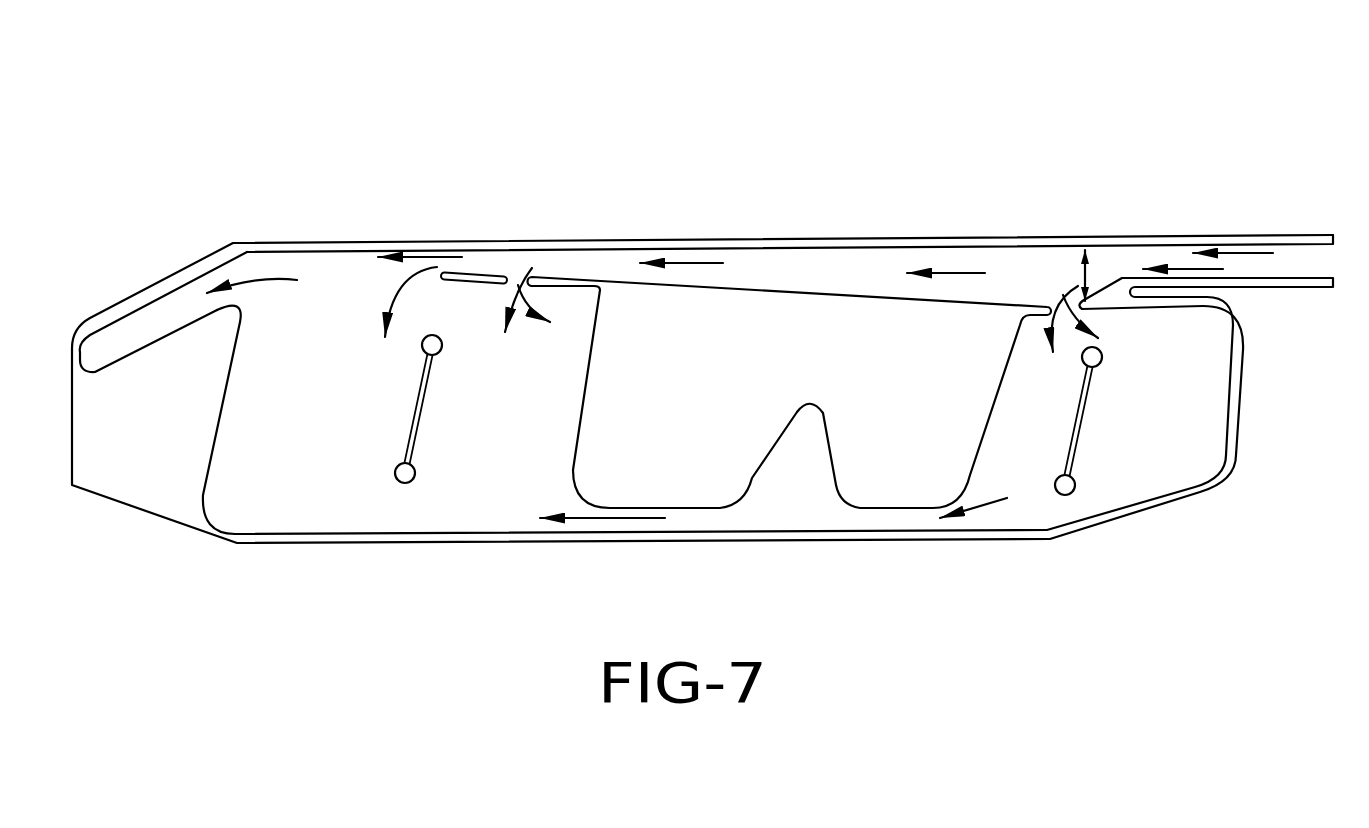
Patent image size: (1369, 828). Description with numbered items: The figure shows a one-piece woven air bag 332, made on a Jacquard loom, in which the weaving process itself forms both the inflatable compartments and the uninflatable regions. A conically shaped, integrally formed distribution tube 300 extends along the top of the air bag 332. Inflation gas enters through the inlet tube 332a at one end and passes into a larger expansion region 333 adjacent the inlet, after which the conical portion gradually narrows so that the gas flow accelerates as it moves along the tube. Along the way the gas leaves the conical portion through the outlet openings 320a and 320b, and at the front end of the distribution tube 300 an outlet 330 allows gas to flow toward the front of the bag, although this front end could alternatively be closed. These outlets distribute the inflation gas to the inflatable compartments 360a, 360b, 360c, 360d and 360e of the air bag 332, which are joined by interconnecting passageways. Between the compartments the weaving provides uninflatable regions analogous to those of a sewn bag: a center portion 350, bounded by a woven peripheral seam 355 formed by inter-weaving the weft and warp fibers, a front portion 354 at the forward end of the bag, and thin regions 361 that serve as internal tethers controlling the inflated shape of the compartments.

The distribution tube 300 is at (855, 273).
The air bag 332 is at (357, 205).
The inlet tube 332a is at (1297, 257).
The expansion region 333 is at (1087, 303).
The front outlet 330 is at (447, 267).
The outlet opening 320a is at (515, 290).
The outlet opening 320b is at (1052, 303).
The center portion 350 is at (780, 373).
The front portion 354 is at (170, 435).
The seam 355 is at (683, 512).
The inflatable compartment 360a is at (150, 318).
The inflatable compartment 360b is at (345, 373).
The inflatable compartment 360c is at (515, 410).
The inflatable compartment 360d is at (1057, 431).
The inflatable compartment 360e is at (1183, 426).
The thin regions 361 is at (408, 432).